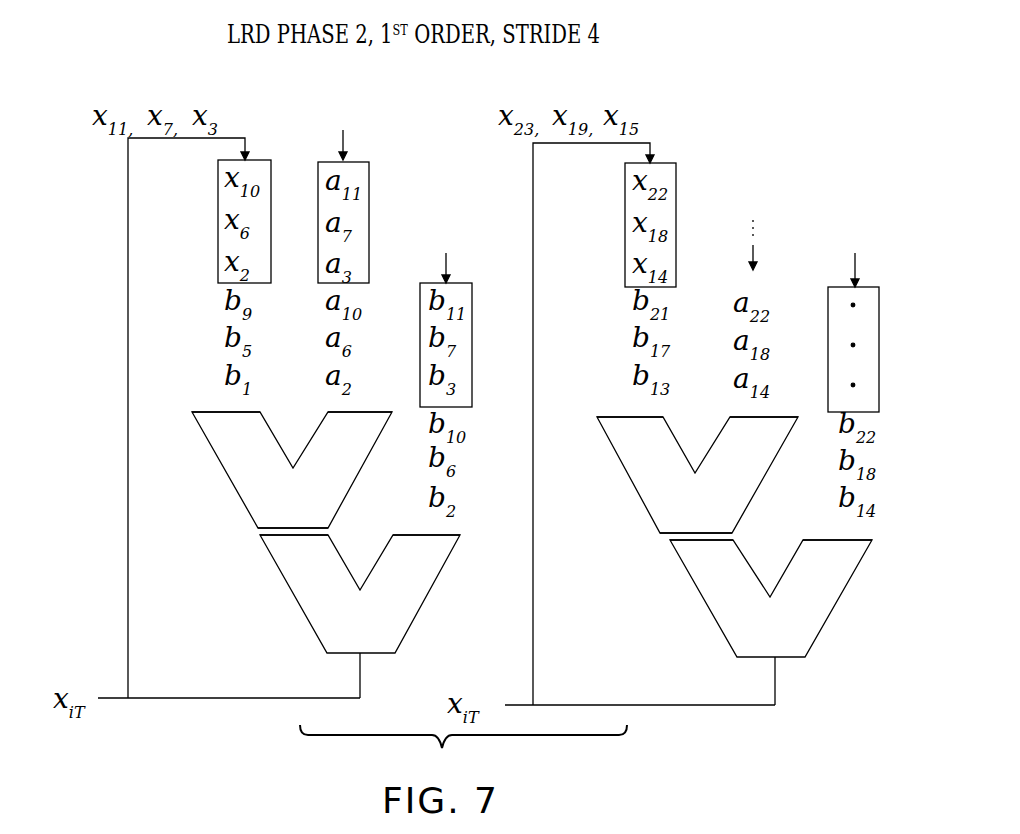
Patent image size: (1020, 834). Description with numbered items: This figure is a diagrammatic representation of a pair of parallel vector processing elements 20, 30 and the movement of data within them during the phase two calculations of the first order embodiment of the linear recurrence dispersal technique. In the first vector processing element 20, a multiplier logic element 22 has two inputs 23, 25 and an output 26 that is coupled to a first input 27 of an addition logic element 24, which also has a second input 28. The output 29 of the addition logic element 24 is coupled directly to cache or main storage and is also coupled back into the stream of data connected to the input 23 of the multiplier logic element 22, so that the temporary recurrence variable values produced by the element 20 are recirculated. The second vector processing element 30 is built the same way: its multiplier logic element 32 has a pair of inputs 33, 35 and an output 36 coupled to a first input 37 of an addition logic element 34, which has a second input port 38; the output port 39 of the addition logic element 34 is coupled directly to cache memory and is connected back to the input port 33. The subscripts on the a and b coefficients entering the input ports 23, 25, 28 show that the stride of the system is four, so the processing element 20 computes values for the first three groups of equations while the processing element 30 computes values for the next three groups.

The vector processing element 20 is at (214, 646).
The multiplier logic element 22 is at (226, 480).
The first input of multiplier logic element 23 is at (200, 409).
The addition logic element 24 is at (307, 618).
The second input of multiplier logic element 25 is at (328, 412).
The output of multiplier logic element 26 is at (302, 528).
The first input of addition logic element 27 is at (267, 539).
The second input of addition logic element 28 is at (445, 536).
The output of addition logic element 29 is at (374, 660).
The vector processing element 30 is at (622, 652).
The multiplier logic element 32 is at (630, 479).
The input of multiplier logic element 33 is at (611, 417).
The addition logic element 34 is at (719, 625).
The input of multiplier logic element 35 is at (730, 419).
The output of multiplier logic element 36 is at (705, 533).
The first input of addition logic element 37 is at (682, 540).
The second input port of addition logic element 38 is at (856, 540).
The output port of addition logic element 39 is at (789, 662).